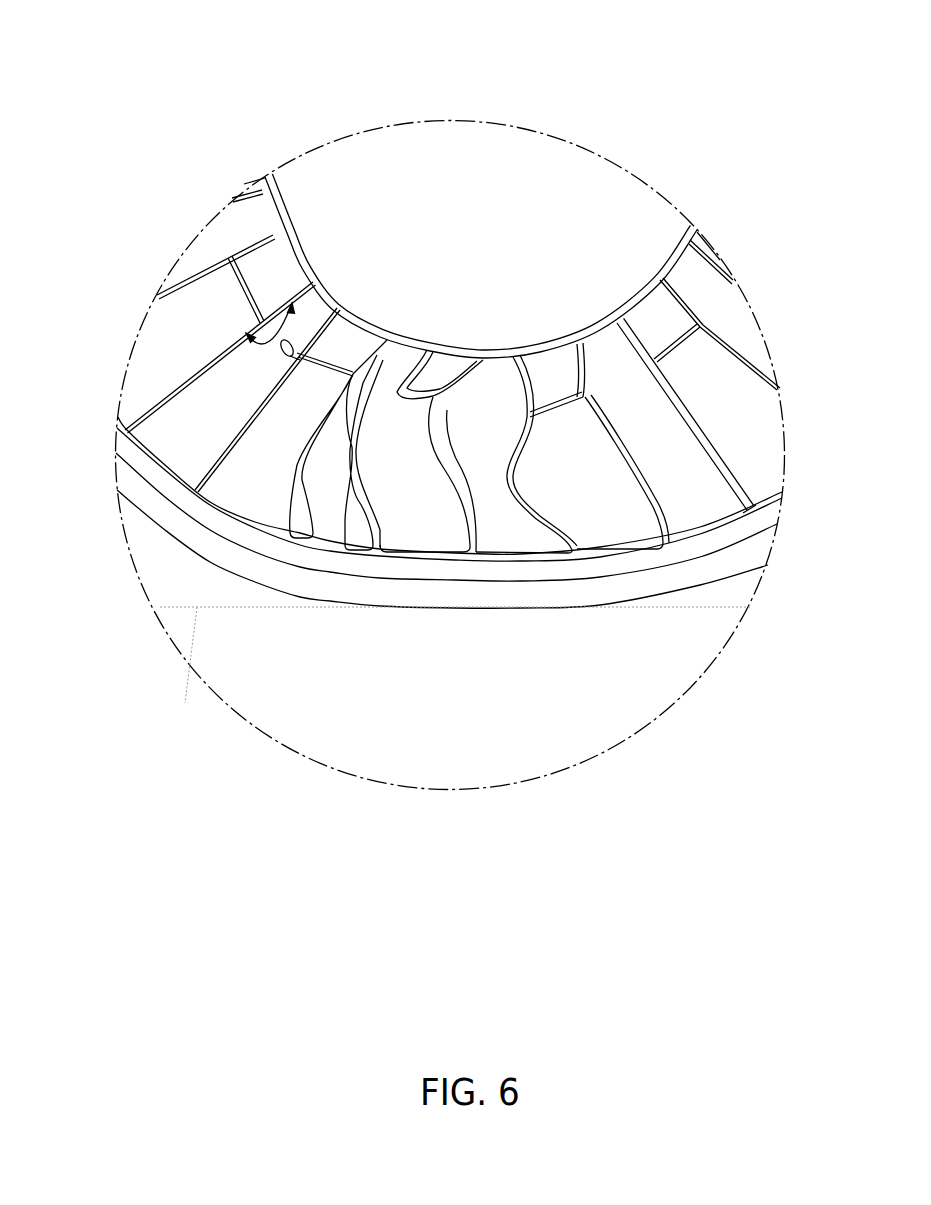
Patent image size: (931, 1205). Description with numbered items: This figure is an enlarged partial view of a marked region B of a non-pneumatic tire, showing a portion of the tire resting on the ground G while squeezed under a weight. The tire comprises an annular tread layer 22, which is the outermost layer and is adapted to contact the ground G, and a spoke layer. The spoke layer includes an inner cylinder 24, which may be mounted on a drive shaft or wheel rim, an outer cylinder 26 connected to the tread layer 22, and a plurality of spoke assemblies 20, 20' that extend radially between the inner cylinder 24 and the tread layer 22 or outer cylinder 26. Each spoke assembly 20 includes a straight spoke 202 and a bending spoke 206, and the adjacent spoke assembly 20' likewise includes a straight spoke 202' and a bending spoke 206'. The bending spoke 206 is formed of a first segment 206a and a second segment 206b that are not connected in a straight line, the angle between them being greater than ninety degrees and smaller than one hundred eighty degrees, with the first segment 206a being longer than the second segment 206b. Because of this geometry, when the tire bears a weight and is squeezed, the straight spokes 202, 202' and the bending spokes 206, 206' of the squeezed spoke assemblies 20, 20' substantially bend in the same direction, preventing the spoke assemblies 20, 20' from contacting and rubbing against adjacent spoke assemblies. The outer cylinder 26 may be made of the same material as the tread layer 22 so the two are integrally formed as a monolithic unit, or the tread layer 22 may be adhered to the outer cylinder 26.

The marked region B is at (538, 120).
The spoke assembly 20 is at (245, 507).
The spoke assembly 20' is at (431, 517).
The tread layer 22 is at (700, 573).
The inner cylinder 24 is at (500, 352).
The outer cylinder 26 is at (747, 533).
The straight spoke 202 is at (183, 440).
The straight spoke 202' is at (385, 551).
The bending spoke 206 is at (321, 560).
The bending spoke 206' is at (556, 531).
The first segment 206a is at (183, 370).
The second segment 206b is at (285, 290).
The ground G is at (455, 674).